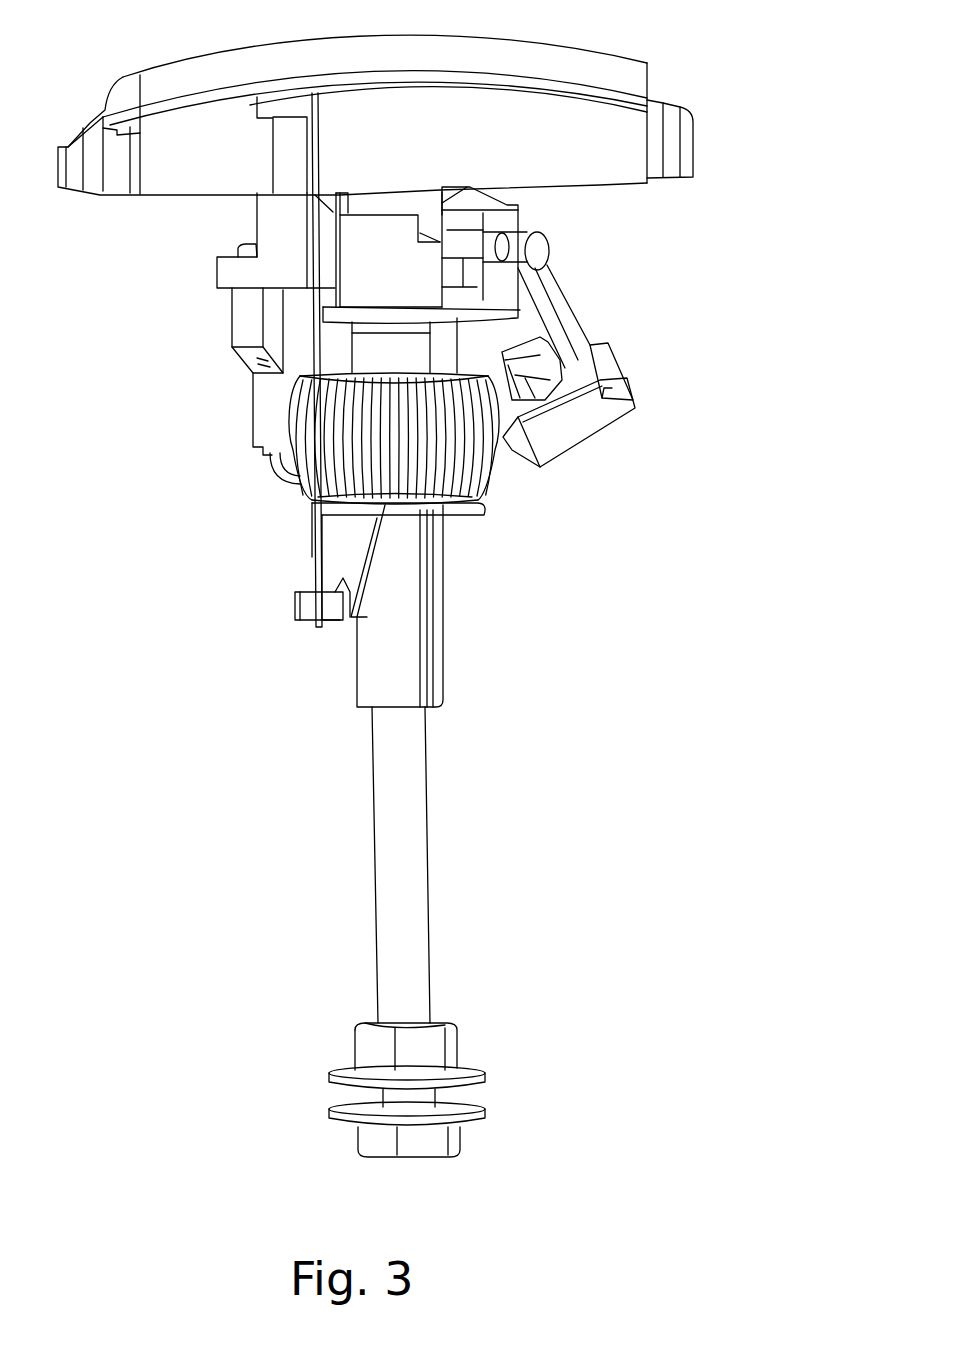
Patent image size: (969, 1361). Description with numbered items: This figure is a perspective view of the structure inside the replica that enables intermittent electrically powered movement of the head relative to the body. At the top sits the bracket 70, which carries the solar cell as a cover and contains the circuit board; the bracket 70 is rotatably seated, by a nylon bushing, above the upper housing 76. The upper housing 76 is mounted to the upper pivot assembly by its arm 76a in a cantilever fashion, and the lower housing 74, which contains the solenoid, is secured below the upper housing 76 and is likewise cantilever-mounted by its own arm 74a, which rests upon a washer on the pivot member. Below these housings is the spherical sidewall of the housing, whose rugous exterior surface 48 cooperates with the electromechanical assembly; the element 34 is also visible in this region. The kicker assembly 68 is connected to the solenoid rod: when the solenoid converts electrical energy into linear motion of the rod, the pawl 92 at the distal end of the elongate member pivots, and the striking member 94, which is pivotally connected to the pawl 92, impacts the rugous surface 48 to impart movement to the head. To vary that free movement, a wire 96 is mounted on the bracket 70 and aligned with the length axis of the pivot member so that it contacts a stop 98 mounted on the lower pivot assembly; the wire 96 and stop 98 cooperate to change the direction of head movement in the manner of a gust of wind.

The bracket 70 is at (160, 152).
The upper housing 76 is at (283, 237).
The lower housing 74 is at (253, 393).
The arm 76a is at (407, 280).
The arm 74a is at (412, 363).
The wire 96 is at (316, 529).
The rugous exterior surface 48 is at (482, 472).
The shaft 34 is at (458, 463).
The stop 98 is at (295, 612).
The pawl 92 is at (563, 287).
The kicker assembly 68 is at (645, 378).
The striking member 94 is at (572, 432).